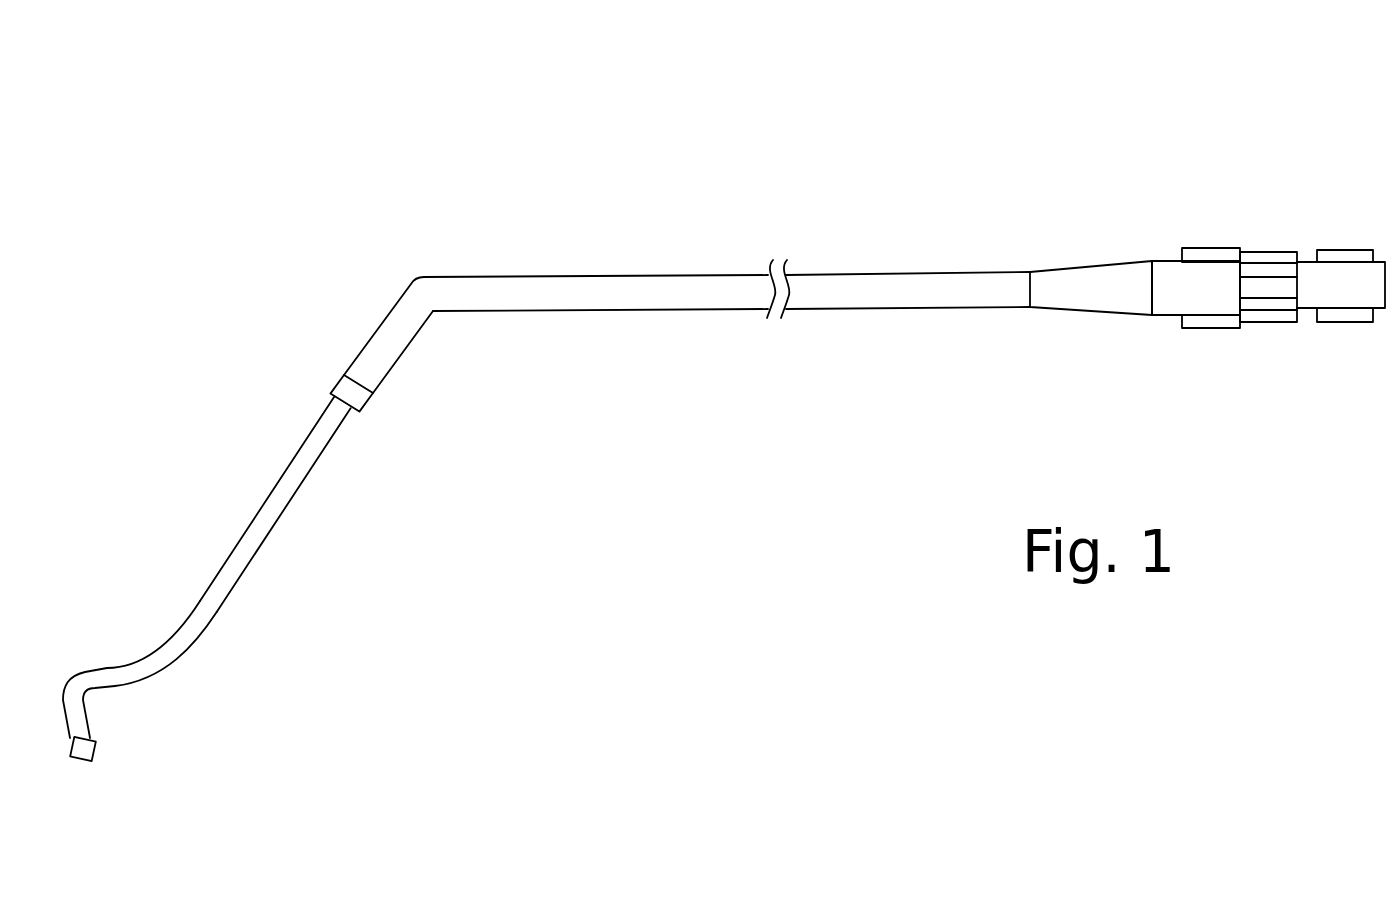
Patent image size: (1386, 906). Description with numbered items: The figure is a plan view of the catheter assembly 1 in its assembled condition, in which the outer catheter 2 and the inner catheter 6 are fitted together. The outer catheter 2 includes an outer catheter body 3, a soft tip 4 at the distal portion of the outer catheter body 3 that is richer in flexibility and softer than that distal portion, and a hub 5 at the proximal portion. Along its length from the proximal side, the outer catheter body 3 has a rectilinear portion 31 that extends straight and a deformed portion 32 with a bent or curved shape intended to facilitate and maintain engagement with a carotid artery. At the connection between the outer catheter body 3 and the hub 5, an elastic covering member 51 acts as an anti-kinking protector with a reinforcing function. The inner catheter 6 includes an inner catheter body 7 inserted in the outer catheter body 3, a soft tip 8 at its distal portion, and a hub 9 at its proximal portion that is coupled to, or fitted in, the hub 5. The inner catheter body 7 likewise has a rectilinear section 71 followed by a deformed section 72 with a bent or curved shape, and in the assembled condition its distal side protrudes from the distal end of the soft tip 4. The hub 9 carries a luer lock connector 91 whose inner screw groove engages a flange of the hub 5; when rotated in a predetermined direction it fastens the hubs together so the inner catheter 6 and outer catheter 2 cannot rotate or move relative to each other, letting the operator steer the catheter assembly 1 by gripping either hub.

The catheter assembly 1 is at (968, 127).
The outer catheter 2 is at (974, 261).
The outer catheter body 3 is at (672, 310).
The rectilinear portion 31 is at (727, 291).
The deformed portion 32 is at (425, 297).
The soft tip 4 is at (348, 393).
The hub 5 is at (1202, 276).
The covering member 51 is at (1093, 284).
The inner catheter 6 is at (1312, 334).
The inner catheter body 7 is at (313, 464).
The rectilinear section 71 is at (325, 435).
The deformed section 72 is at (80, 668).
The soft tip 8 is at (94, 749).
The hub 9 is at (1343, 286).
The luer lock connector 91 is at (1268, 279).